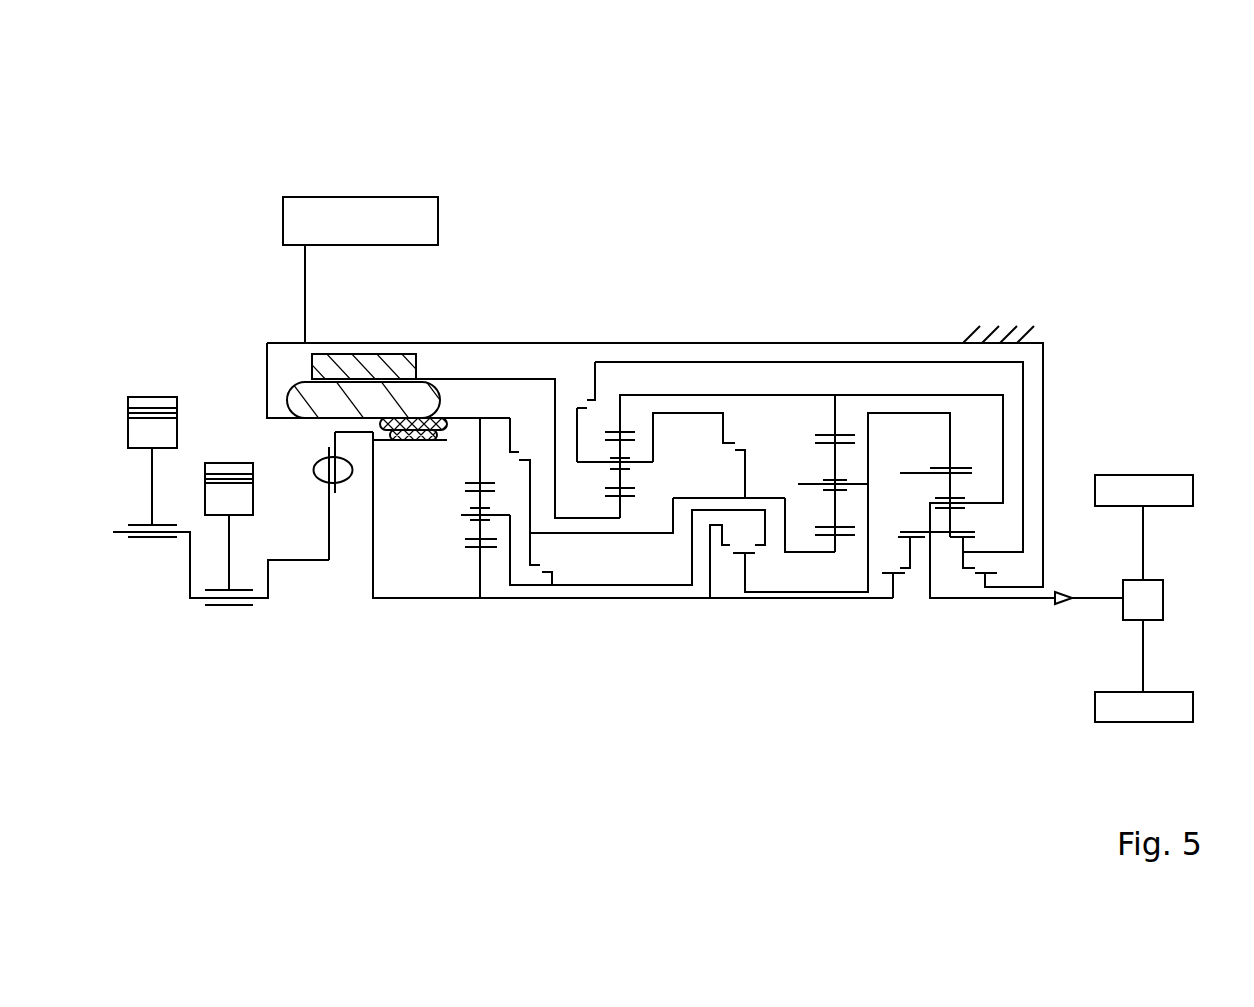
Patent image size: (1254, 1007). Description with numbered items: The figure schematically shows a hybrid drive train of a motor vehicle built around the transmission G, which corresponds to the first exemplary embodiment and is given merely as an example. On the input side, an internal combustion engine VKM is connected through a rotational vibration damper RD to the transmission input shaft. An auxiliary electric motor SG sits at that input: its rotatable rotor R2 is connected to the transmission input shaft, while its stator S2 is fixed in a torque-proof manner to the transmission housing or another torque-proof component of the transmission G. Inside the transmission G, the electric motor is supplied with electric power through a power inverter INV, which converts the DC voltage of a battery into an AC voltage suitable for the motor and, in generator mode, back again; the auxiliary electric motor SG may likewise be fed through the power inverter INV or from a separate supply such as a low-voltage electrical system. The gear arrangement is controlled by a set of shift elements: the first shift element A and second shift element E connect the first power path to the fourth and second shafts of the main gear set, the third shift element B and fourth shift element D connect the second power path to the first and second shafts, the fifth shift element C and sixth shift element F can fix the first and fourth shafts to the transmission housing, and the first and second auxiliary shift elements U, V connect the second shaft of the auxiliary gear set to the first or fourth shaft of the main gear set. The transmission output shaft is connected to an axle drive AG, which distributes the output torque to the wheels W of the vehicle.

The power inverter INV is at (347, 192).
The stator of the auxiliary electric motor S2 is at (435, 425).
The transmission G is at (872, 322).
The wheels W is at (1158, 485).
The axle drive AG is at (1165, 585).
The internal combustion engine VKM is at (186, 614).
The rotational vibration damper RD is at (319, 491).
The rotor of the auxiliary electric motor R2 is at (412, 441).
The auxiliary electric motor SG is at (424, 445).
The first shift element A is at (902, 567).
The third shift element B is at (541, 559).
The fifth shift element C is at (520, 475).
The fourth shift element D is at (749, 551).
The second shift element E is at (727, 561).
The sixth shift element F is at (979, 562).
The first auxiliary shift element U is at (732, 455).
The second auxiliary shift element V is at (582, 412).